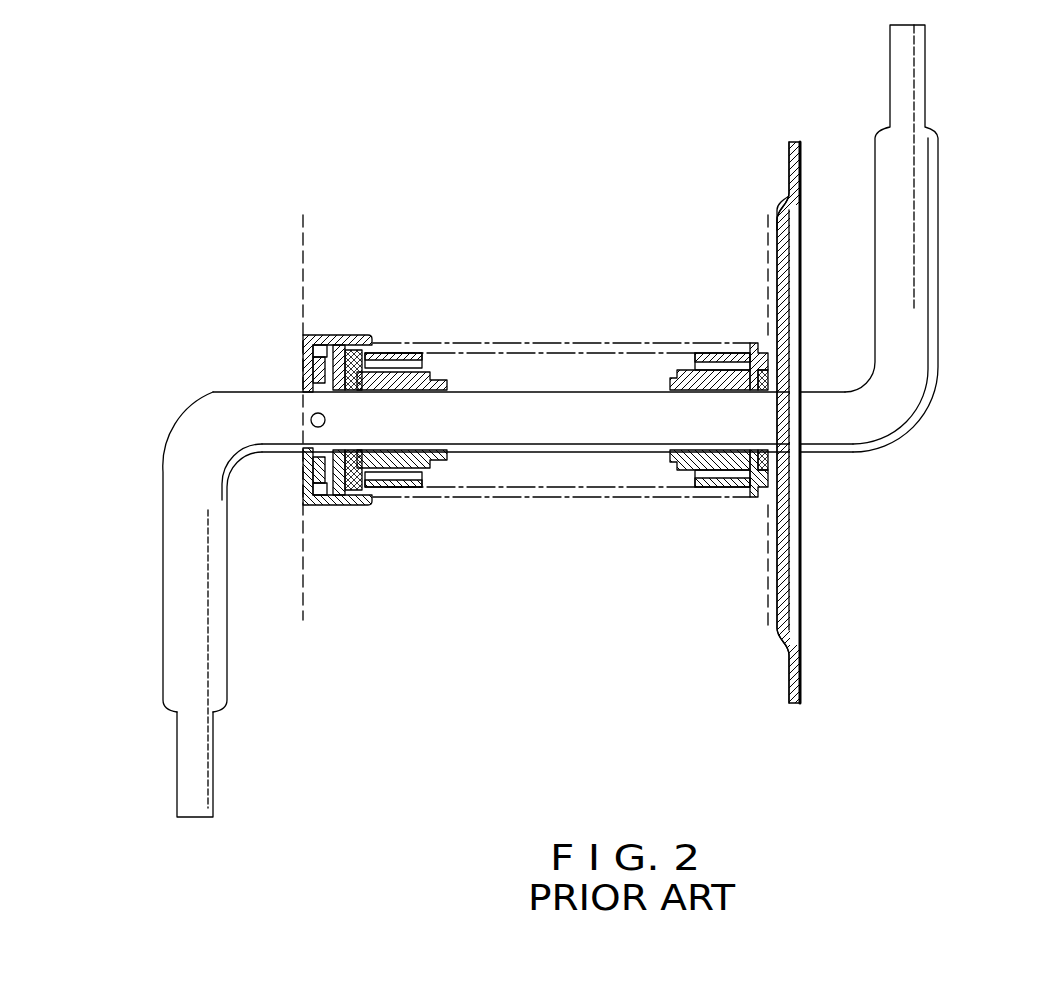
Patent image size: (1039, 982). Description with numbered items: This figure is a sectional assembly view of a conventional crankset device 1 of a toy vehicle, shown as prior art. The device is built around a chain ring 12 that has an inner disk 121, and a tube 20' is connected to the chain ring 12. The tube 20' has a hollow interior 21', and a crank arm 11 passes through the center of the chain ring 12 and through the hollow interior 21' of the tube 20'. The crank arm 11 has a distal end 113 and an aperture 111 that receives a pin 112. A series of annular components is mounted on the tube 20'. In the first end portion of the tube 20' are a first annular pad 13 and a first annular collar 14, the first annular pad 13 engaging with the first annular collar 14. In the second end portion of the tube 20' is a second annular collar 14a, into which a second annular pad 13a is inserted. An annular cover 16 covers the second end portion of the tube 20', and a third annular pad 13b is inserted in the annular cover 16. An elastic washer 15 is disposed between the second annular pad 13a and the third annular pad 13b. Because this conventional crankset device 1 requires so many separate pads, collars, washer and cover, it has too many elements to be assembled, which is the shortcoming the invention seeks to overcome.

The crankset device 1 is at (549, 421).
The crank arm 11 is at (583, 425).
The aperture 111 is at (315, 428).
The pin 112 is at (313, 414).
The distal end 113 is at (177, 762).
The chain ring 12 is at (745, 372).
The inner disk 121 is at (786, 192).
The first annular pad 13 is at (757, 500).
The second annular pad 13a is at (358, 346).
The third annular pad 13b is at (327, 345).
The first annular collar 14 is at (685, 374).
The second annular collar 14a is at (405, 374).
The elastic washer 15 is at (343, 347).
The annular cover 16 is at (356, 500).
The tube 20' is at (561, 315).
The hollow interior 21' is at (561, 536).